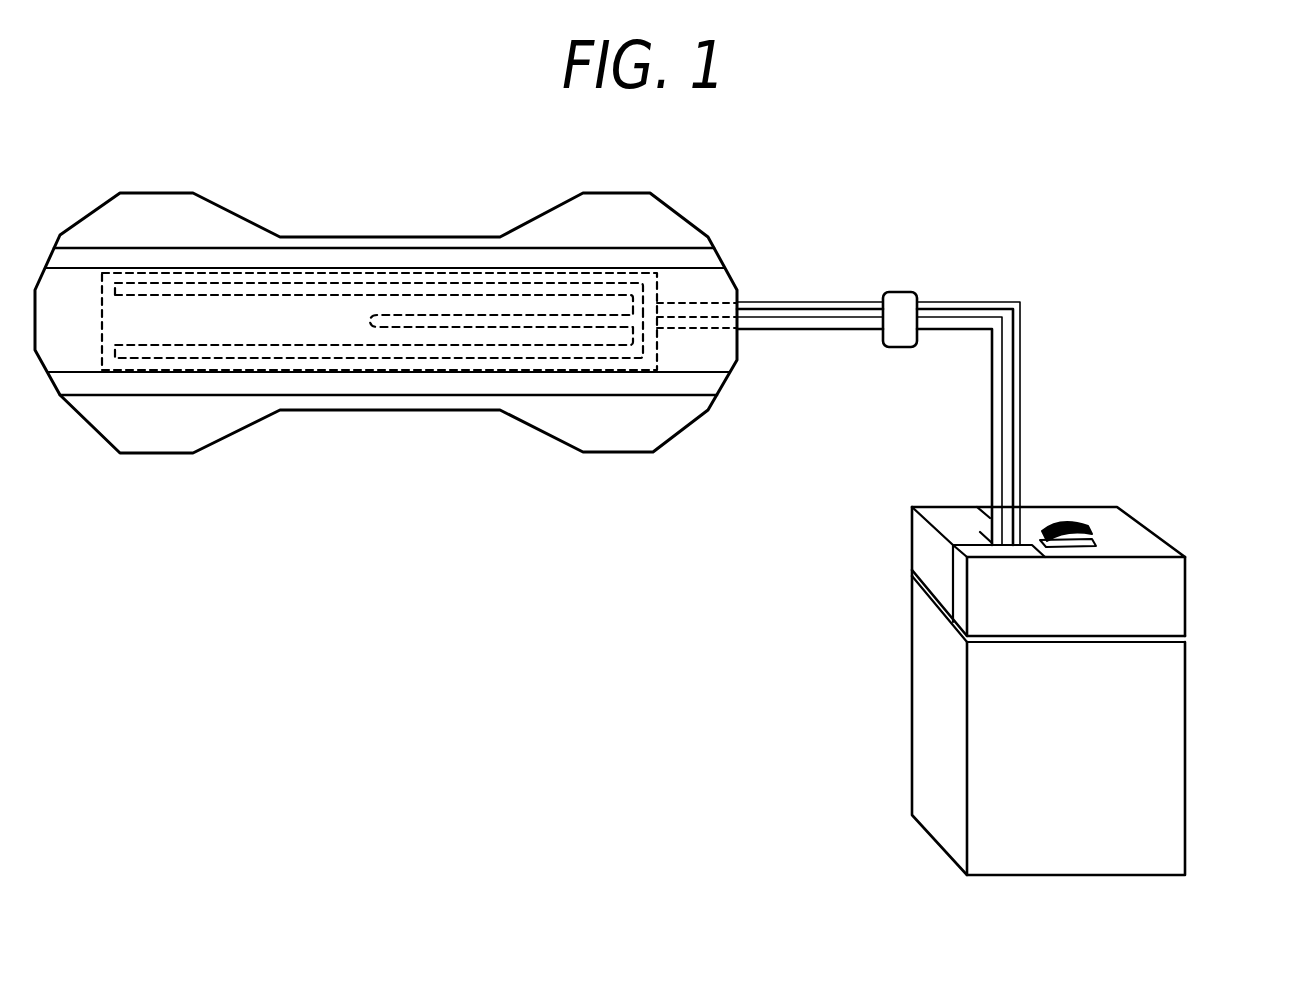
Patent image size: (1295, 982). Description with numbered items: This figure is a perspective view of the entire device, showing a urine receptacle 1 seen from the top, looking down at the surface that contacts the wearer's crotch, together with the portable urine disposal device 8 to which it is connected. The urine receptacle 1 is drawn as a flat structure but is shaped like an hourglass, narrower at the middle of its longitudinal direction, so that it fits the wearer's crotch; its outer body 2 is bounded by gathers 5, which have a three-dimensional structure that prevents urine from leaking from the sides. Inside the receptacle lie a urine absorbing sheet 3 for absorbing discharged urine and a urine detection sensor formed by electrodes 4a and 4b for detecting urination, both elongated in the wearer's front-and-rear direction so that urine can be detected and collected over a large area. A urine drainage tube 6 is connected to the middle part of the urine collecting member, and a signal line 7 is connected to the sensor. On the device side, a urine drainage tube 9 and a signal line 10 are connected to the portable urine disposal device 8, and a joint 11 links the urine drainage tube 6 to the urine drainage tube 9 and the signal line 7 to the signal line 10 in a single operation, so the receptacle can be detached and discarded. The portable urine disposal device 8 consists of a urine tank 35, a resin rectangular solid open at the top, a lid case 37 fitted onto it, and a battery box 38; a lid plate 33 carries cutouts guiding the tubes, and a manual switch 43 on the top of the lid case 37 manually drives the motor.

The urine receptacle 1 is at (412, 203).
The absorbent article body 2 is at (167, 435).
The urine absorbing sheet 3 is at (325, 323).
The electrode 4a is at (337, 293).
The electrode 4b is at (428, 362).
The gathers 5 is at (245, 387).
The urine drainage tube 6 is at (778, 327).
The signal line 7 is at (802, 304).
The portable urine disposal device 8 is at (903, 730).
The urine drainage tube 9 is at (990, 423).
The signal line 10 is at (1020, 355).
The joint 11 is at (905, 299).
The lid plate 33 is at (1187, 630).
The urine tank 35 is at (1160, 752).
The lid case 37 is at (1163, 588).
The battery box 38 is at (917, 548).
The manual switch 43 is at (1075, 527).